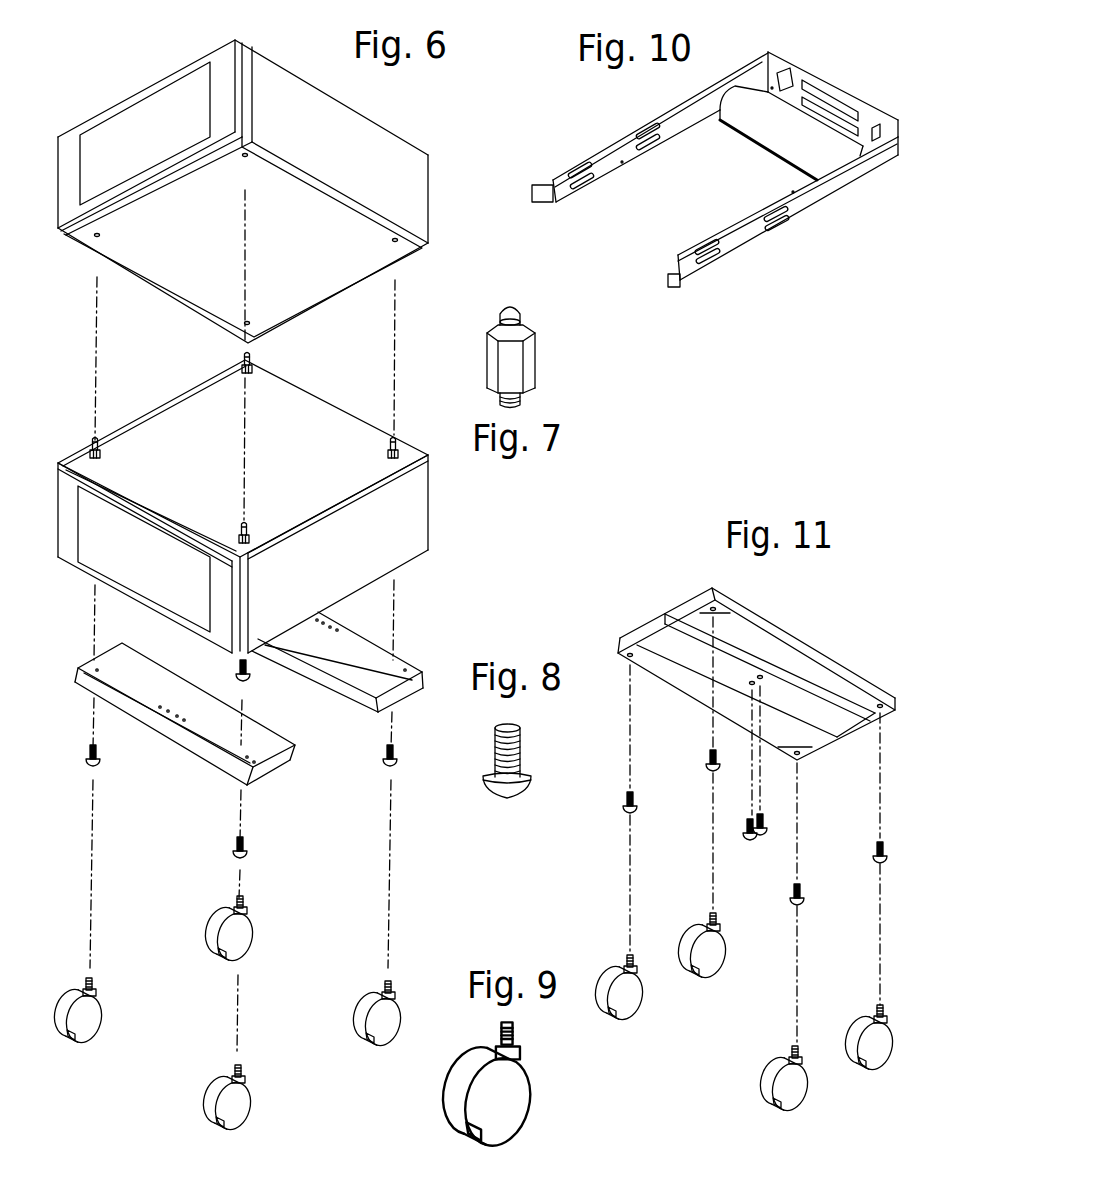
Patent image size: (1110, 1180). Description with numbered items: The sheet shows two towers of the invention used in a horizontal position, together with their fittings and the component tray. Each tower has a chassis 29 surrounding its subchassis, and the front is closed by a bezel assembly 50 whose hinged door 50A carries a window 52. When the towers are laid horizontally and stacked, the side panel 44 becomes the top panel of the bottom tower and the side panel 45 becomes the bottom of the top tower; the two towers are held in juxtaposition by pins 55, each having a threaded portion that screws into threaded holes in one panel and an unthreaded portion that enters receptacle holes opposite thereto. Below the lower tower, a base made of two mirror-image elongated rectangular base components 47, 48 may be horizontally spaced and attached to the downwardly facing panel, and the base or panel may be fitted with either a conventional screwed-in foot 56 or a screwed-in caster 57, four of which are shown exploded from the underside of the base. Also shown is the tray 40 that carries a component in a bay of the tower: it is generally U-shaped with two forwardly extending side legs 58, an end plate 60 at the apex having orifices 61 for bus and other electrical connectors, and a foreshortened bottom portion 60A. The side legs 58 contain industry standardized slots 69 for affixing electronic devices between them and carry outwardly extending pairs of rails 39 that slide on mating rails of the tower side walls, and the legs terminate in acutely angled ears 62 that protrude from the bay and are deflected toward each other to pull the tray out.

In FIG. 6, the chassis 29 is at (388, 111).
In FIG. 10, the rails 39 is at (600, 150).
In FIG. 10, the tray 40 is at (655, 227).
In FIG. 6, the side panel 44 is at (311, 467).
In FIG. 6, the side panel 45 is at (311, 264).
In FIG. 6, the base component 47 is at (387, 703).
In FIG. 6, the base component 48 is at (267, 773).
In FIG. 6, the bezel assembly 50 is at (243, 43).
In FIG. 6, the door 50A is at (65, 547).
In FIG. 6, the window 52 is at (164, 146).
In FIG. 6, the pin 55 is at (102, 452).
In FIG. 7, the pin 55 is at (530, 372).
In FIG. 6, the foot 56 is at (245, 855).
In FIG. 8, the foot 56 is at (524, 775).
In FIG. 6, the caster 57 is at (254, 930).
In FIG. 9, the caster 57 is at (519, 1103).
In FIG. 10, the side legs 58 is at (622, 163).
In FIG. 10, the end plate 60 is at (794, 67).
In FIG. 10, the bottom portion 60A is at (816, 146).
In FIG. 10, the orifices 61 is at (826, 97).
In FIG. 10, the ears 62 is at (538, 202).
In FIG. 10, the slots 69 is at (583, 183).